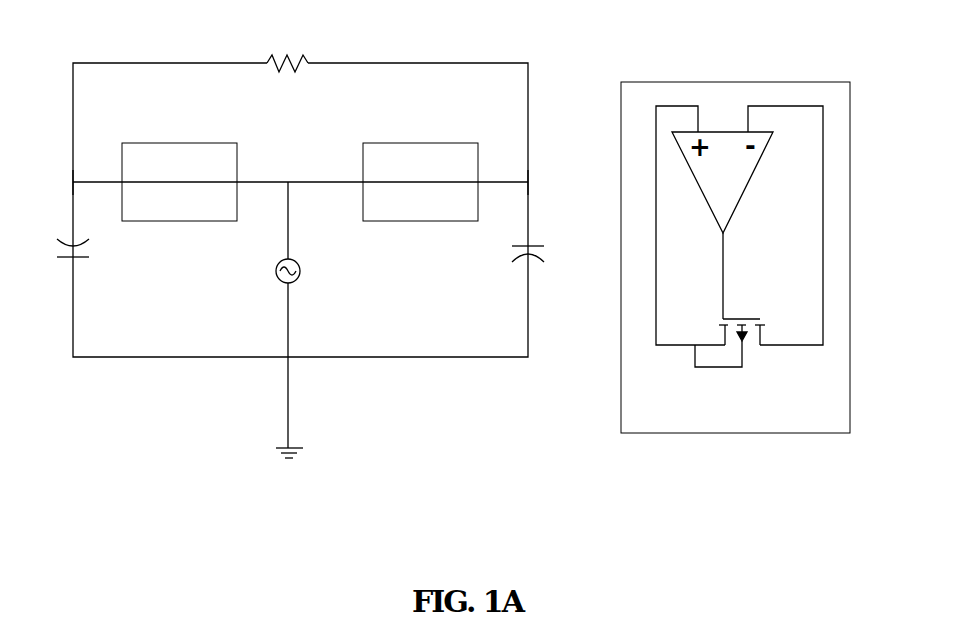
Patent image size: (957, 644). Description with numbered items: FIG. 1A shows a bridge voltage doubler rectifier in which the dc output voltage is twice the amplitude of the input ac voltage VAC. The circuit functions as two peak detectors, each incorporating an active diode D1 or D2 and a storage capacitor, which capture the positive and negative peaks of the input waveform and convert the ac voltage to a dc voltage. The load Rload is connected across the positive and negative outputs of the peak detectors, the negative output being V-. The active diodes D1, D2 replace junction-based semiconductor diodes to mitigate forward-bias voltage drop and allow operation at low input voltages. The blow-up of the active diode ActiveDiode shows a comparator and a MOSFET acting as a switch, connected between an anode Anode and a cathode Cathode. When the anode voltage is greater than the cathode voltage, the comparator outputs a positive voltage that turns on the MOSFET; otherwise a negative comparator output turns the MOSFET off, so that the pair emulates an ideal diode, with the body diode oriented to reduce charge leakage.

The load Rload is at (293, 86).
The active diode D1 is at (621, 433).
The active diode D2 is at (621, 433).
The cathode voltage V- is at (88, 168).
The input ac voltage VAC is at (257, 271).
The active diode ActiveDiode is at (735, 276).
The anode Anode is at (668, 240).
The cathode Cathode is at (806, 240).